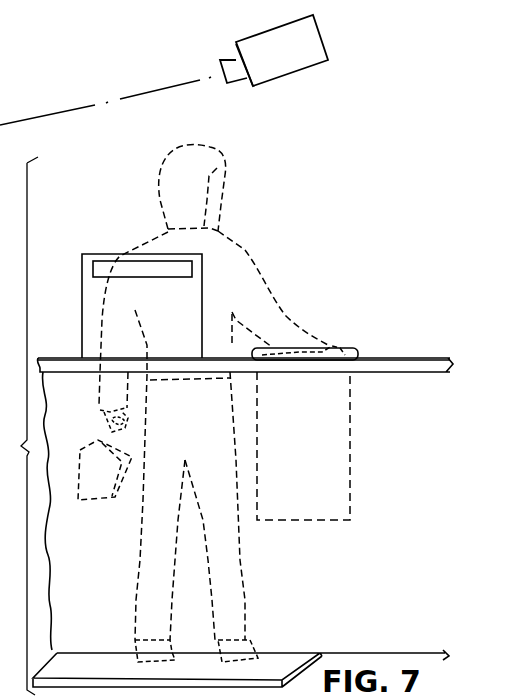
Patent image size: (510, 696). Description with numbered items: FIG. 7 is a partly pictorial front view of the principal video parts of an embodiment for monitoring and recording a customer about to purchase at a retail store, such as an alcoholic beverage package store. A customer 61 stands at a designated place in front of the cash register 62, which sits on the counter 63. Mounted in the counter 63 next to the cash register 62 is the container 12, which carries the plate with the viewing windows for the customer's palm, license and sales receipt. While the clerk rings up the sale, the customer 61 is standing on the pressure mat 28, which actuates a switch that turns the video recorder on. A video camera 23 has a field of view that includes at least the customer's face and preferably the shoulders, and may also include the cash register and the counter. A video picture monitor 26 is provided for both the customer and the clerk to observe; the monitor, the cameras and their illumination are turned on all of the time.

The container 12 is at (351, 455).
The video camera 23 is at (281, 80).
The video picture monitor 26 is at (105, 79).
The pressure mat 28 is at (283, 663).
The customer 61 is at (240, 246).
The cash register 62 is at (80, 253).
The counter 63 is at (377, 358).